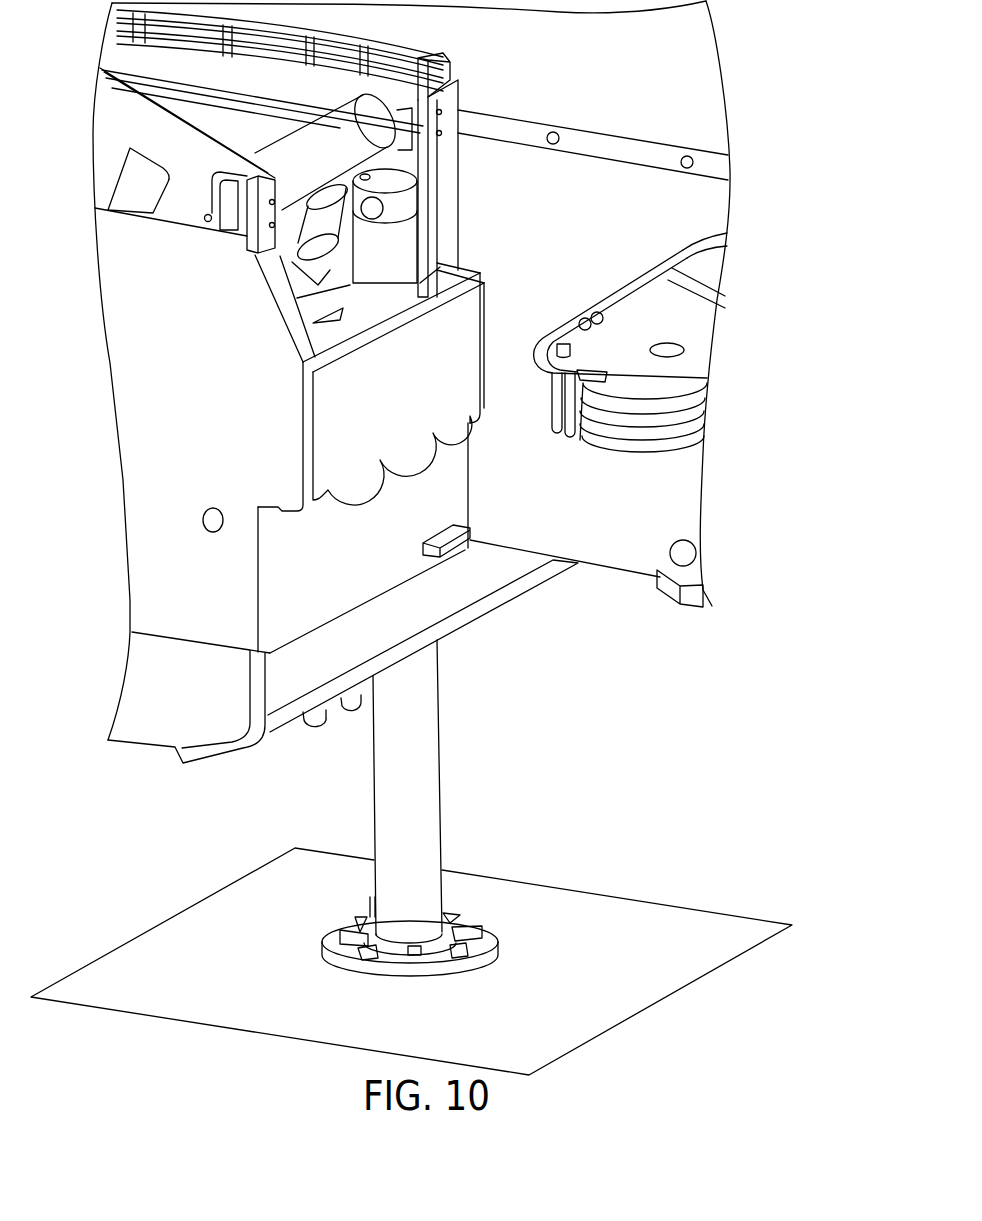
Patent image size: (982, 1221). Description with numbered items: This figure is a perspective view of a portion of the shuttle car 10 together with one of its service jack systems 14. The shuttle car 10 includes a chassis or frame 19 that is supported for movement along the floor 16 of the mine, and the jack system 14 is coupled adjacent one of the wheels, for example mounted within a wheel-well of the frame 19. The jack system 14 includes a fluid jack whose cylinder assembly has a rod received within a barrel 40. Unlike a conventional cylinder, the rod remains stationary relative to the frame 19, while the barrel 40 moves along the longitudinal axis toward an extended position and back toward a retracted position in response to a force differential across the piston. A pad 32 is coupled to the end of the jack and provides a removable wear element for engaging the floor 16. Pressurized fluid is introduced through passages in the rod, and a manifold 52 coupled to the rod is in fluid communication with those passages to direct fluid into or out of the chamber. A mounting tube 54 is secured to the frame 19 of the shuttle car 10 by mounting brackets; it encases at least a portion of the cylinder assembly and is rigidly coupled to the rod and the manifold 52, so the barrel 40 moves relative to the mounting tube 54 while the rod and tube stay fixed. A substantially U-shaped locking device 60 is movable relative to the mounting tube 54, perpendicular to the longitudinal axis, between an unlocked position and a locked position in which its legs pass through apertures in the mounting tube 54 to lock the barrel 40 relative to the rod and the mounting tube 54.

The shuttle car 10 is at (710, 90).
The jack system 14 is at (404, 808).
The floor 16 is at (163, 988).
The frame 19 is at (530, 576).
The pad 32 is at (495, 947).
The barrel 40 is at (428, 833).
The manifold 52 is at (440, 190).
The mounting tube 54 is at (405, 262).
The locking device 60 is at (440, 531).